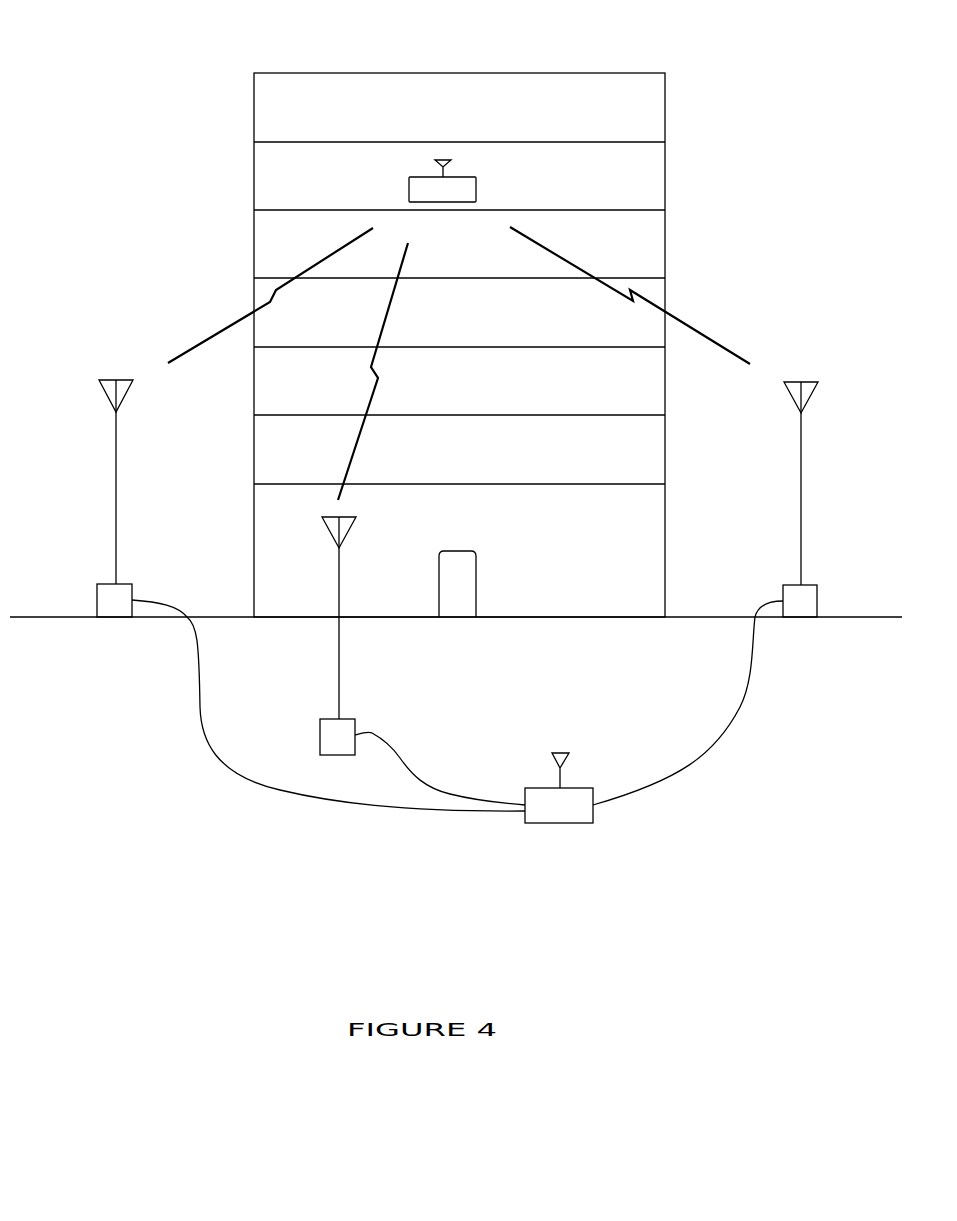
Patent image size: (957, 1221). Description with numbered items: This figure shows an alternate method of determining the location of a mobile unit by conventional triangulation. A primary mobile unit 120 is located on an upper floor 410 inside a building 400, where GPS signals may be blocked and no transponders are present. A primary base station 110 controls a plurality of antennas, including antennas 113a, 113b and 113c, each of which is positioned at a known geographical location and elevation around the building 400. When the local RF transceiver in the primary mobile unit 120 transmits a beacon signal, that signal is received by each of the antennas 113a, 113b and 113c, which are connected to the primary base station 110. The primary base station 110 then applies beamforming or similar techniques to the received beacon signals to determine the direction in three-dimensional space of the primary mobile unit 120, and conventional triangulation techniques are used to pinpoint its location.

The building 400 is at (254, 73).
The upper floor 410 is at (272, 209).
The primary mobile unit 120 is at (476, 193).
The antenna 113a is at (116, 483).
The antenna 113b is at (801, 517).
The antenna 113c is at (339, 687).
The primary base station 110 is at (580, 823).